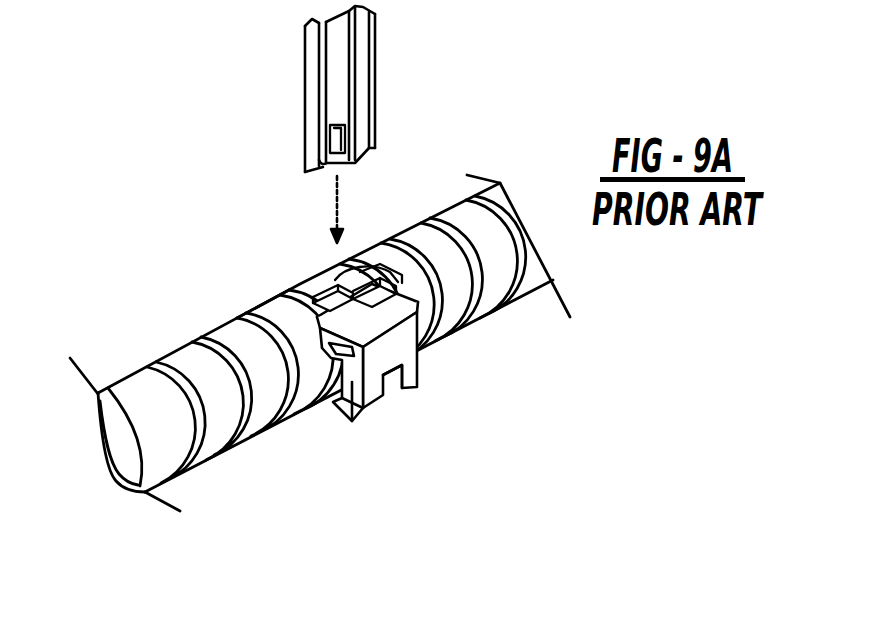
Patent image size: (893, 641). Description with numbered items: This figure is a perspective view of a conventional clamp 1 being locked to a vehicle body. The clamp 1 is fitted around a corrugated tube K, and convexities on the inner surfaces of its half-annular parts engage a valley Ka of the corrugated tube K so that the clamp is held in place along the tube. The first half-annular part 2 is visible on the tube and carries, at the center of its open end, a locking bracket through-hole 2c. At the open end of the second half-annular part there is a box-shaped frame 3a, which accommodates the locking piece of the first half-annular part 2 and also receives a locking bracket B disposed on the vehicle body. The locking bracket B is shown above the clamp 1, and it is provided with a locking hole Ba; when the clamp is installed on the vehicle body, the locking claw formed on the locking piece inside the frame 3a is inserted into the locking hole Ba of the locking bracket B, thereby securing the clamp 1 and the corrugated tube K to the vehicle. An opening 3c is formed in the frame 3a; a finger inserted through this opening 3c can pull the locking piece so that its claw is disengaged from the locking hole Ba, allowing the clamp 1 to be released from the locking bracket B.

The corrugated tube K is at (538, 302).
The valley Ka is at (520, 307).
The clamp 1 is at (422, 390).
The first half-annular part 2 is at (295, 304).
The locking bracket through-hole 2c is at (366, 290).
The box-shaped frame 3a is at (353, 397).
The opening 3c is at (393, 395).
The locking bracket B is at (377, 94).
The locking hole Ba is at (323, 142).